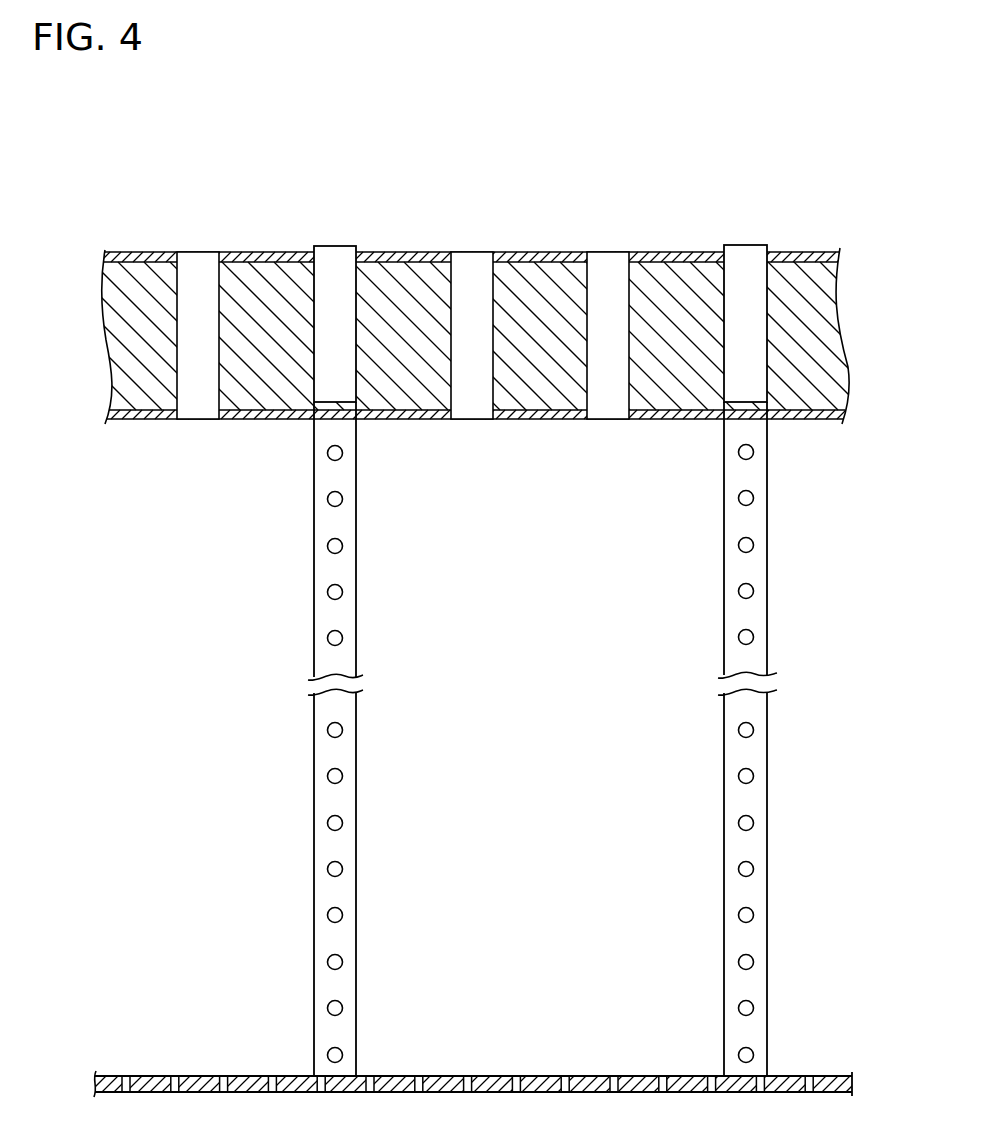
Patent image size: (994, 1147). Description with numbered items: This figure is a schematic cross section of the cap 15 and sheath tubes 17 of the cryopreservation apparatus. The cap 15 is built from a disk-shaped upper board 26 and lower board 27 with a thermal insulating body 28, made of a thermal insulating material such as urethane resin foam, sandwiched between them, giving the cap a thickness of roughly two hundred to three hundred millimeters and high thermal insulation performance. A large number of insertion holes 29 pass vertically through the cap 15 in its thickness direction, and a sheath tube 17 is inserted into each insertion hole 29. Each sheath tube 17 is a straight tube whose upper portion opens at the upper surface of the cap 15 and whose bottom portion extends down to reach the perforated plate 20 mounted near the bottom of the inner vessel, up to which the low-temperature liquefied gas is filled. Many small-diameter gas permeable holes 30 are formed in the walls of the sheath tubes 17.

The cap 15 is at (565, 232).
The sheath tube 17 is at (332, 752).
The perforated plate 20 is at (830, 1076).
The upper board 26 is at (808, 257).
The lower board 27 is at (808, 418).
The thermal insulating body 28 is at (803, 330).
The insertion hole 29 is at (177, 379).
The gas permeable hole 30 is at (336, 547).